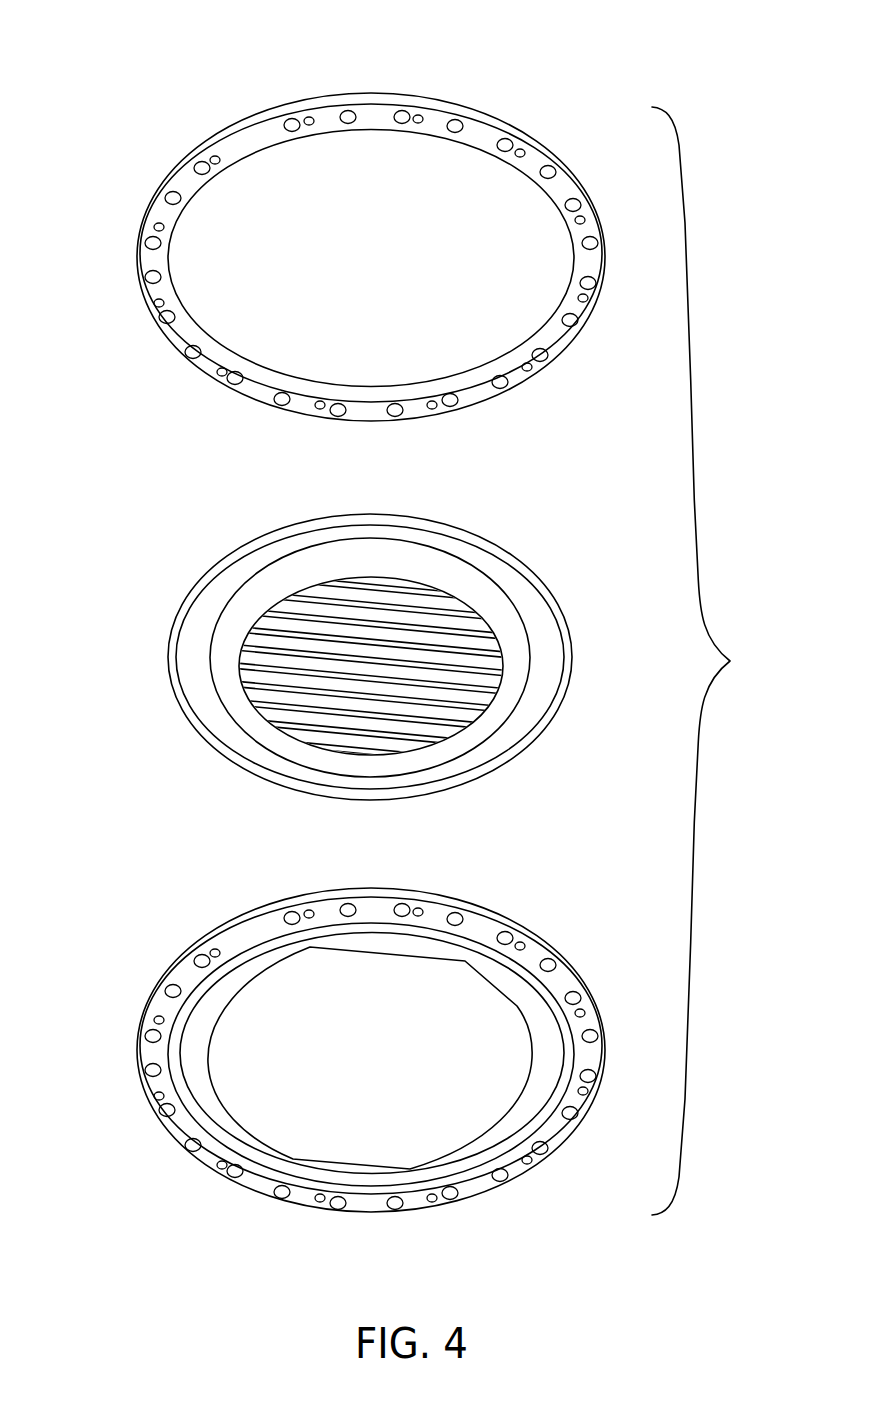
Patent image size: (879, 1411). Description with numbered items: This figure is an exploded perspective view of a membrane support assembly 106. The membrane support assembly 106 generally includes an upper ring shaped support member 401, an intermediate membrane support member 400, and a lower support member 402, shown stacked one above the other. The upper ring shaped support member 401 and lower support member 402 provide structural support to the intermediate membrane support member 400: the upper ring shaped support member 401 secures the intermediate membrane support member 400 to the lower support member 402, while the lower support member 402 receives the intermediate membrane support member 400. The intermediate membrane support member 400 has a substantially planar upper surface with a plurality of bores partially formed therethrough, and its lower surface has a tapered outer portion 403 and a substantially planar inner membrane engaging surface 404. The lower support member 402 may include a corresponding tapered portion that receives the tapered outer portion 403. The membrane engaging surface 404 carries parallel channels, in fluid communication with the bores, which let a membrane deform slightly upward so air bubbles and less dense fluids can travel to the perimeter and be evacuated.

The membrane support assembly 106 is at (717, 661).
The intermediate membrane support member 400 is at (370, 648).
The upper ring shaped support member 401 is at (162, 122).
The lower support member 402 is at (132, 948).
The tapered outer portion 403 is at (507, 743).
The membrane engaging surface 404 is at (415, 662).